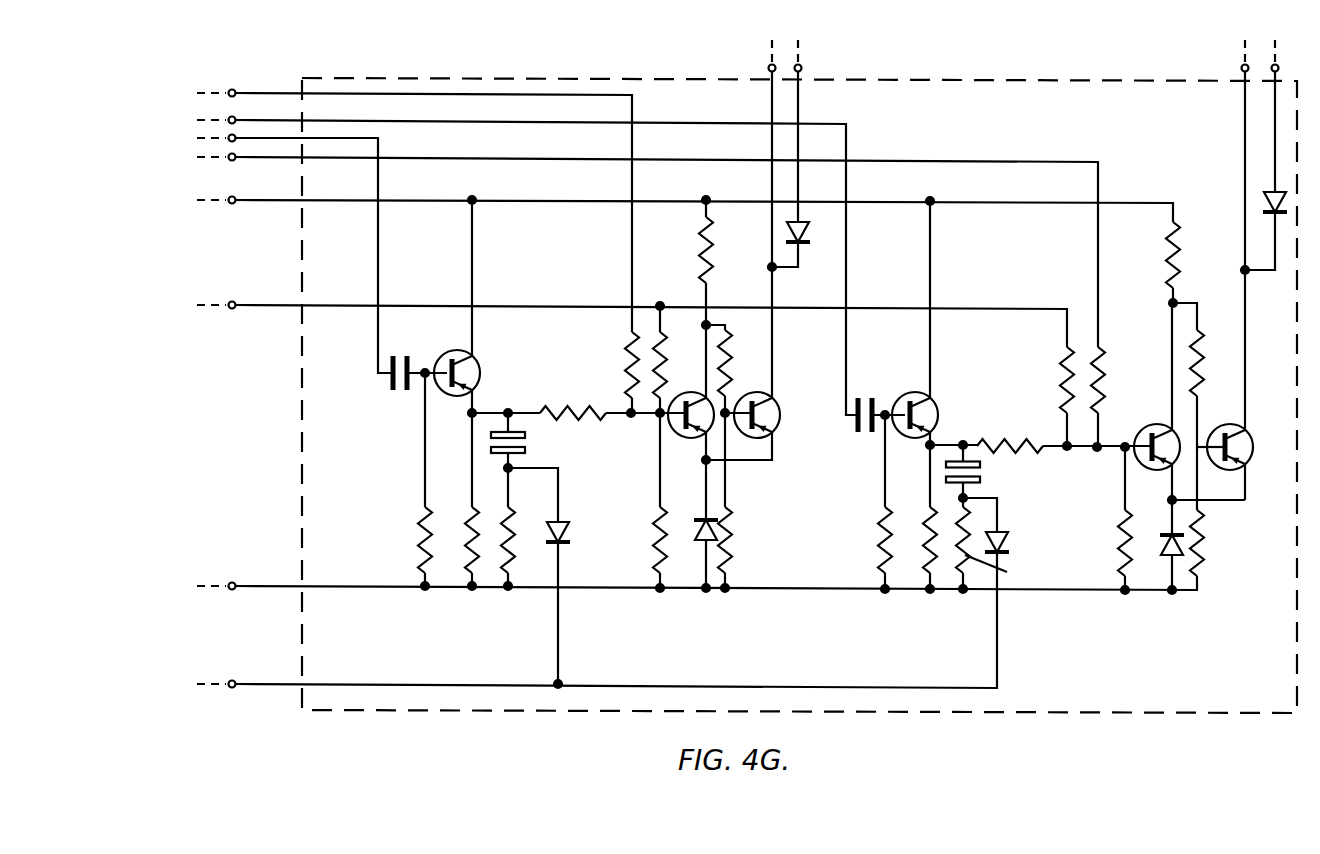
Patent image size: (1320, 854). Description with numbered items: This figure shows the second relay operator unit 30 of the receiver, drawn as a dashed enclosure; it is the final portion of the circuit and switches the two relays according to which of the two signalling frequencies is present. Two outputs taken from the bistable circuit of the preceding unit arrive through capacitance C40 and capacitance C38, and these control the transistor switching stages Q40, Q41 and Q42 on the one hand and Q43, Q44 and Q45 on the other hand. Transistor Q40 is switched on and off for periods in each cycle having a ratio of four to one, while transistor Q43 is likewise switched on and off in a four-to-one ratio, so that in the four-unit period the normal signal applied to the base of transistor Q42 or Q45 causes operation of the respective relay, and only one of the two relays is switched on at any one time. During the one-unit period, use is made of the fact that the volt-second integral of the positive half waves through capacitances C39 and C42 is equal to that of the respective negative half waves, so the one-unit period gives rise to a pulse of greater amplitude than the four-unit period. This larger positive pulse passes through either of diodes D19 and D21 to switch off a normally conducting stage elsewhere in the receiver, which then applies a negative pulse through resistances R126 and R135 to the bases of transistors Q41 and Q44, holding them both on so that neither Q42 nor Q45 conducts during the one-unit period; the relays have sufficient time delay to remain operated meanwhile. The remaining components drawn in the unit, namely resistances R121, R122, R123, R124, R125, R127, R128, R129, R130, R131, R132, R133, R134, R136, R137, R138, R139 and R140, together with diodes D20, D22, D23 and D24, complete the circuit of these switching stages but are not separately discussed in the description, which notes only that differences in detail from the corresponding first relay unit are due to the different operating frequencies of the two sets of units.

The second relay operator unit 30 is at (377, 76).
The resistor 43K R121 is at (420, 522).
The resistor 22K R122 is at (468, 560).
The resistor R123 is at (496, 560).
The resistor 10K R124 is at (540, 410).
The resistor 10K R125 is at (628, 333).
The resistance R126 is at (657, 333).
The resistor 1K R127 is at (702, 250).
The resistor 1K R128 is at (736, 345).
The resistor 1K R129 is at (730, 548).
The resistor R130 is at (655, 573).
The resistor 43K R131 is at (883, 520).
The resistor 2.2K R132 is at (927, 547).
The resistor 10K R133 is at (963, 572).
The resistor 10K R134 is at (976, 442).
The resistance R135 is at (1060, 350).
The resistor 10K R136 is at (1100, 350).
The resistor 1K R137 is at (1170, 230).
The resistor 1K R138 is at (1190, 342).
The resistor 10K R139 is at (1122, 518).
The resistor 1K R140 is at (1200, 565).
The capacitance C38 is at (392, 354).
The capacitance C39 is at (514, 455).
The capacitance C40 is at (867, 438).
The capacitance C42 is at (975, 462).
The diode D19 is at (567, 531).
The diode D20 is at (700, 528).
The diode D21 is at (1019, 541).
The diode D22 is at (1170, 548).
The diode D23 is at (804, 248).
The diode D24 is at (1268, 205).
The transistor switching stage Q40 is at (473, 362).
The transistor switching stage Q41 is at (672, 432).
The transistor switching stage Q42 is at (770, 405).
The transistor switching stage Q43 is at (916, 392).
The transistor switching stage Q44 is at (1140, 433).
The transistor switching stage Q45 is at (1232, 472).